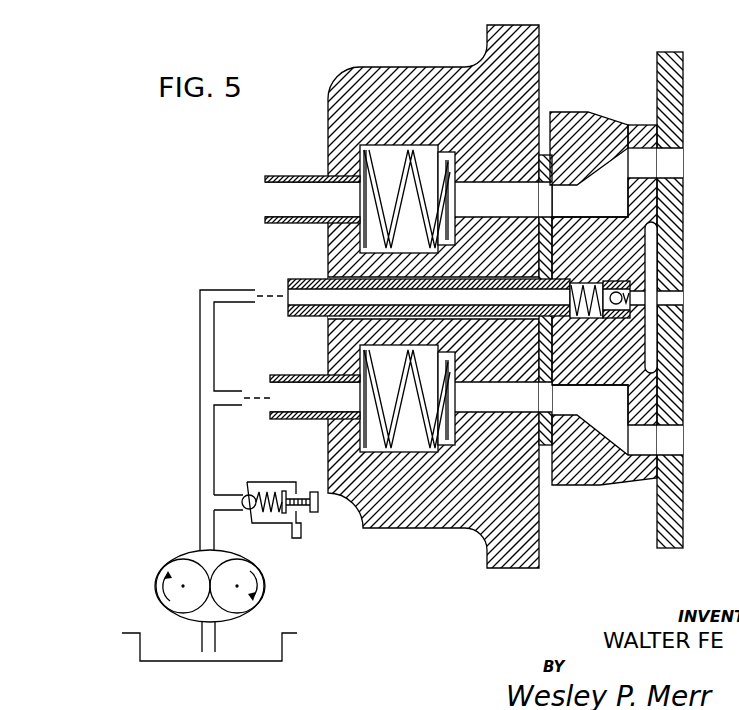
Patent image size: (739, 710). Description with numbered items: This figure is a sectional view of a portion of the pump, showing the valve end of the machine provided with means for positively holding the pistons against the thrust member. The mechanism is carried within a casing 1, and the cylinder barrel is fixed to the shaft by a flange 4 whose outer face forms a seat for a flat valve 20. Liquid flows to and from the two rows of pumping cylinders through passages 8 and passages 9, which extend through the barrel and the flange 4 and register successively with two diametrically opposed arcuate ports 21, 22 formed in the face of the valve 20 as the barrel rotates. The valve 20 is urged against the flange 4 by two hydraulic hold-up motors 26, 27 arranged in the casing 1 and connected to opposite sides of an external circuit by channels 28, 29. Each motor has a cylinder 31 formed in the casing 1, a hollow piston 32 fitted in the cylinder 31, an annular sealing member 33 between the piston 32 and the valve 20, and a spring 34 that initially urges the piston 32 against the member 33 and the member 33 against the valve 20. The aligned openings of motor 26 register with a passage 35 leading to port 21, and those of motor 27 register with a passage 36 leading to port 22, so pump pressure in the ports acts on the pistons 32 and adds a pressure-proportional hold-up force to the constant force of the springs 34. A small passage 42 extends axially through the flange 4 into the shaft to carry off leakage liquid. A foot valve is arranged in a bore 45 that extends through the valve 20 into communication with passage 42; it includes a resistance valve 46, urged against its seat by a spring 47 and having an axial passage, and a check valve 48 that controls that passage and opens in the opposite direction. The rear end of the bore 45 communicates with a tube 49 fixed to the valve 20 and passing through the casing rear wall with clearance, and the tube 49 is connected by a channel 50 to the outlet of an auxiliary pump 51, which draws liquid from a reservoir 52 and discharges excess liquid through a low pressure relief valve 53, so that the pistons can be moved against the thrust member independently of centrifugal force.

The casing 1 is at (438, 77).
The flange 4 is at (670, 97).
The passages 8 is at (672, 160).
The passages 9 is at (675, 440).
The flat valve 20 is at (567, 122).
The arcuate port 21 is at (641, 162).
The arcuate port 22 is at (650, 449).
The hydraulic hold-up motor 26 is at (350, 162).
The hydraulic hold-up motor 27 is at (350, 368).
The channel 28 is at (289, 209).
The channel 29 is at (291, 411).
The cylinder 31 is at (404, 158).
The hollow piston 32 is at (485, 173).
The annular sealing member 33 is at (530, 226).
The spring 34 is at (385, 214).
The passage 35 is at (592, 207).
The passage 36 is at (593, 415).
The passage 42 is at (668, 300).
The bore 45 is at (588, 312).
The resistance valve 46 is at (609, 284).
The spring 47 is at (584, 286).
The check valve 48 is at (614, 312).
The tube 49 is at (300, 285).
The channel 50 is at (208, 472).
The auxiliary pump 51 is at (255, 592).
The reservoir 52 is at (268, 651).
The low pressure relief valve 53 is at (258, 500).